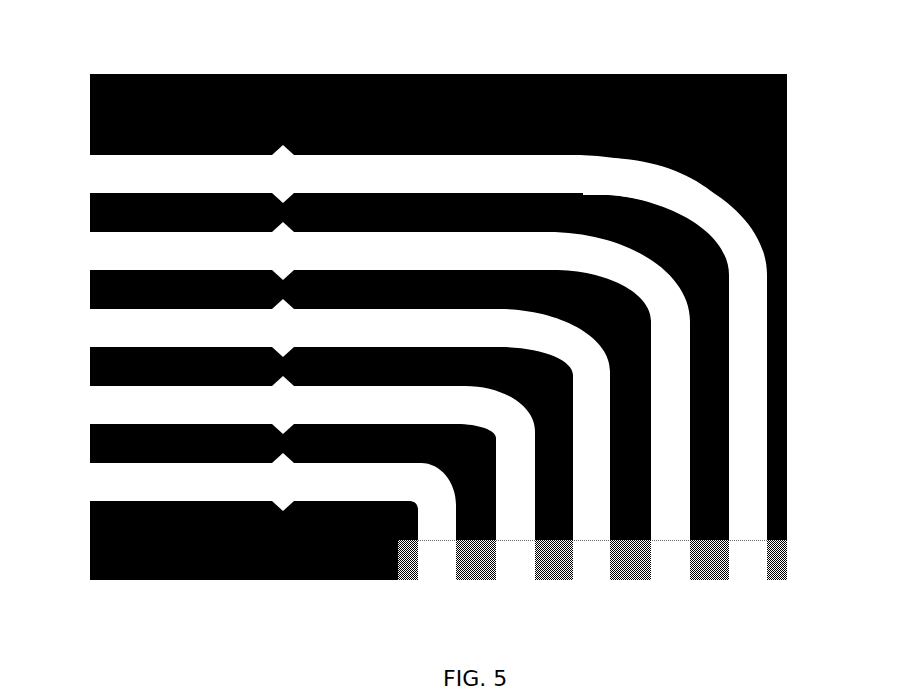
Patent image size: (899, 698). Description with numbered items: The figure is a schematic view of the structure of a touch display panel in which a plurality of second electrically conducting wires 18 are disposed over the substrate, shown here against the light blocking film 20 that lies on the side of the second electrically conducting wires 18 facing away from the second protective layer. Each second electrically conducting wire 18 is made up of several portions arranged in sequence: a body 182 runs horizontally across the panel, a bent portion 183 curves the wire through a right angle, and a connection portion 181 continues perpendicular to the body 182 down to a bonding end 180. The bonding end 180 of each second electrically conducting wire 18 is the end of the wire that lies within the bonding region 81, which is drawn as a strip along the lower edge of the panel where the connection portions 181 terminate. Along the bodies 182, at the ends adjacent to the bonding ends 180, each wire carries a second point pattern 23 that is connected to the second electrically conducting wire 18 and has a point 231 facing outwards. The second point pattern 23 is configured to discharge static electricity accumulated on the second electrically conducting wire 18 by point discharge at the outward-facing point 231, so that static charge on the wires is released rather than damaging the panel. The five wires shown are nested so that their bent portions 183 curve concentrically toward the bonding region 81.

The light blocking film 20 is at (623, 66).
The second electrically conducting wire 18 is at (97, 167).
The body 182 is at (335, 157).
The bent portion 183 is at (690, 203).
The connection portion 181 is at (742, 417).
The second point pattern 23 is at (267, 190).
The point 231 is at (203, 67).
The bonding end 180 is at (572, 552).
The bonding region 81 is at (702, 563).